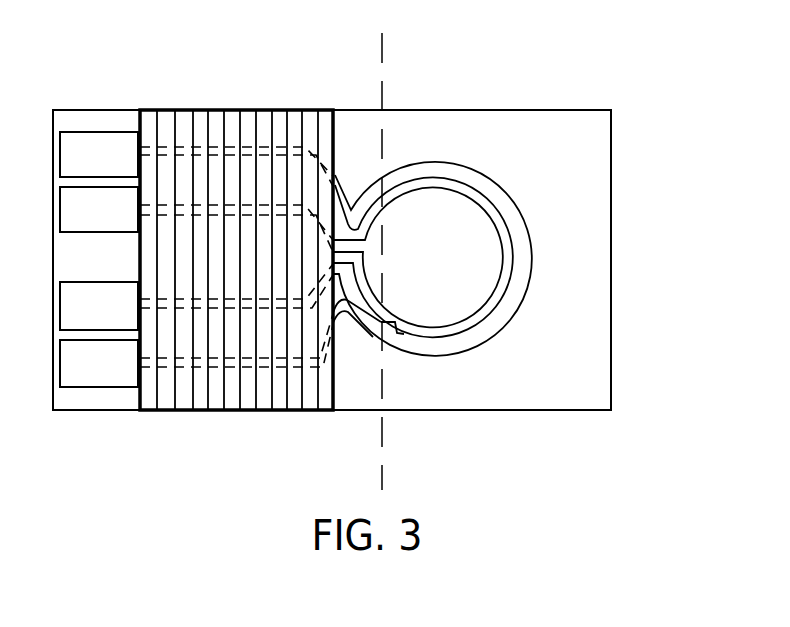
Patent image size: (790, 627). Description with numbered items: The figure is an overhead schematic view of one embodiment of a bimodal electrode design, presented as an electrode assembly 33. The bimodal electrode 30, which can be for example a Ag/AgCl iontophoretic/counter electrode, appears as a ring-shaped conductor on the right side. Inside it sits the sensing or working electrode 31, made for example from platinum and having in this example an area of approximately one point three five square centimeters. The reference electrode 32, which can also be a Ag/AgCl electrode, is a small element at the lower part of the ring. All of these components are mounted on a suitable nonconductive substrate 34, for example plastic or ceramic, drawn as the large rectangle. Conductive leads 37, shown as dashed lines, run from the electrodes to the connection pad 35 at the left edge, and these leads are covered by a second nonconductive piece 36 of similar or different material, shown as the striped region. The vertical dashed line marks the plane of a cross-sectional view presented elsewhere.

The bimodal electrode 30 is at (483, 173).
The sensing or working electrode 31 is at (500, 285).
The reference electrode 32 is at (377, 330).
The electrode assembly 33 is at (410, 110).
The nonconductive substrate 34 is at (586, 207).
The connection pad 35 is at (88, 131).
The second nonconductive piece 36 is at (199, 127).
The conductive leads 37 is at (165, 365).